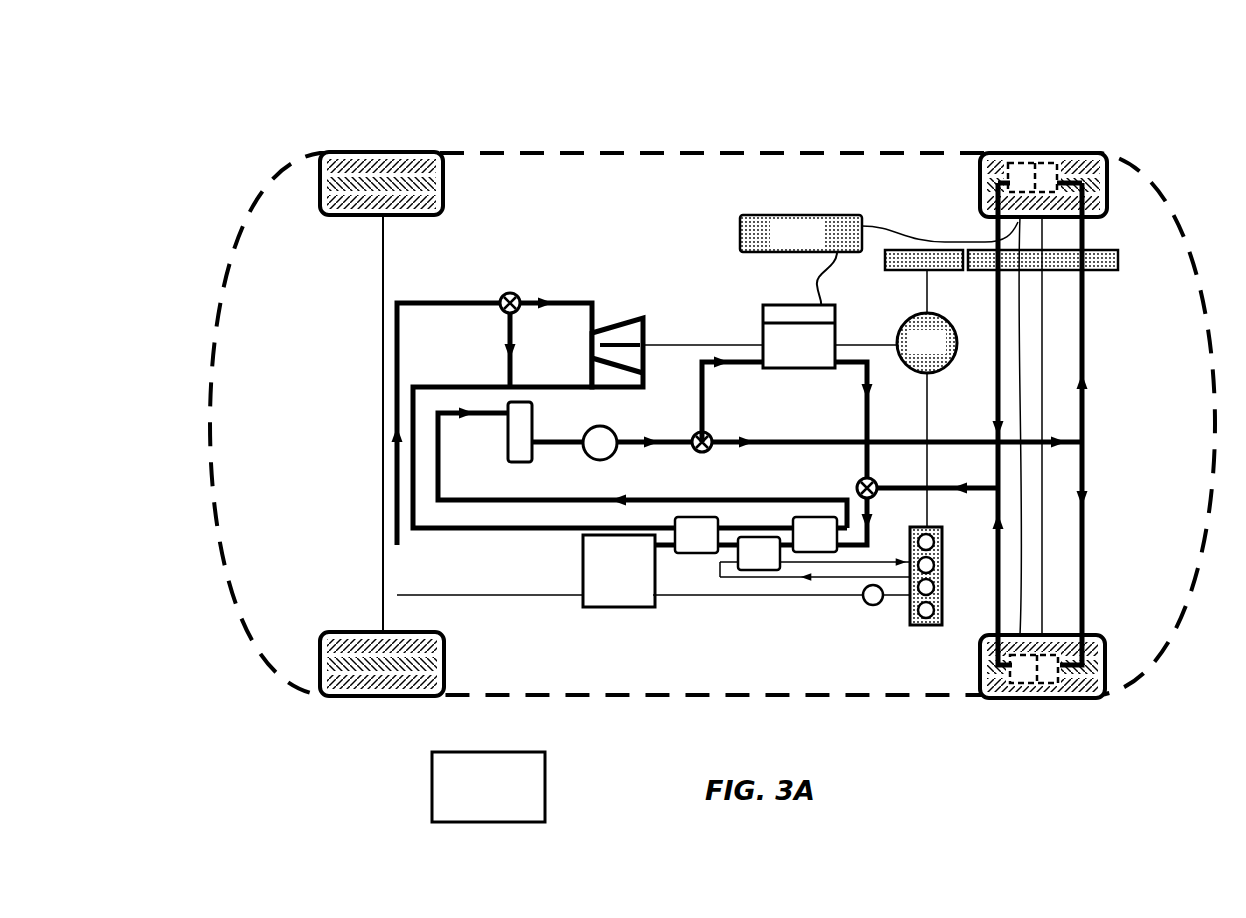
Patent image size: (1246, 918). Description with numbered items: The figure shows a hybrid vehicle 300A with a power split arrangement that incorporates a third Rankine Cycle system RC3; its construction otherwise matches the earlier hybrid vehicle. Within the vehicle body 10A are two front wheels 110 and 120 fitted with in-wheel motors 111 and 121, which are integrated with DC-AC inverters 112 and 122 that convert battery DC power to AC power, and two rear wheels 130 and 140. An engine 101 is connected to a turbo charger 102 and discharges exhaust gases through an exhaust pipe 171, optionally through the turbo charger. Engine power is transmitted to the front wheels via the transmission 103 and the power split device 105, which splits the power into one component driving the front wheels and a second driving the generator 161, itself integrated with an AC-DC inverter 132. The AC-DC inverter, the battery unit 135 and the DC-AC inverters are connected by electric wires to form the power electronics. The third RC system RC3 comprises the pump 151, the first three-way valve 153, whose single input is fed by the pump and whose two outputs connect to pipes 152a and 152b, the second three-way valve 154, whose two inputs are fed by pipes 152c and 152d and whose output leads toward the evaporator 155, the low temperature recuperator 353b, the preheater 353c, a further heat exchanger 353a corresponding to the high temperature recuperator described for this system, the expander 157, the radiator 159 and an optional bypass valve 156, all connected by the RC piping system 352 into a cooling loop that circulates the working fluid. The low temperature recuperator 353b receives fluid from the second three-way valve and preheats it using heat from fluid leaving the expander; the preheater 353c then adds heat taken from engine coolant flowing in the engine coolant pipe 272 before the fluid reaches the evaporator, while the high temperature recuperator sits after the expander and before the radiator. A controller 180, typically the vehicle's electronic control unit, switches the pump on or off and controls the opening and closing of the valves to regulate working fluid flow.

The vehicle body 10A is at (640, 146).
The hybrid vehicle 300A is at (1170, 110).
The rear wheel 130 is at (315, 158).
The rear wheel 140 is at (318, 663).
The front wheel 110 is at (1090, 152).
The in-wheel motor 111 is at (1038, 163).
The DC-AC inverter 112 is at (998, 160).
The front wheel 120 is at (1088, 700).
The in-wheel motor 121 is at (1048, 670).
The DC-AC inverter 122 is at (1025, 670).
The transmission 103 is at (1116, 278).
The power split device 105 is at (896, 398).
The battery unit 135 is at (879, 260).
The AC-DC inverter 132 is at (778, 318).
The generator 161 is at (762, 307).
The third Rankine Cycle system RC3 is at (618, 255).
The expander 157 is at (640, 318).
The bypass valve 156 is at (510, 292).
The radiator 159 is at (533, 430).
The pump 151 is at (593, 460).
The first three-way valve 153 is at (700, 455).
The pipe 152a is at (706, 384).
The pipe 152b is at (774, 447).
The pipe 152c is at (862, 398).
The pipe 152d is at (905, 485).
The second three-way valve 154 is at (857, 483).
The RC piping system 352 is at (462, 485).
The heat exchanger 353a is at (815, 534).
The low temperature recuperator 353b is at (760, 553).
The preheater 353c is at (696, 535).
The evaporator 155 is at (619, 571).
The engine coolant pipe 272 is at (827, 580).
The turbo charger 102 is at (873, 606).
The engine 101 is at (931, 628).
The exhaust pipe 171 is at (490, 598).
The controller 180 is at (488, 752).